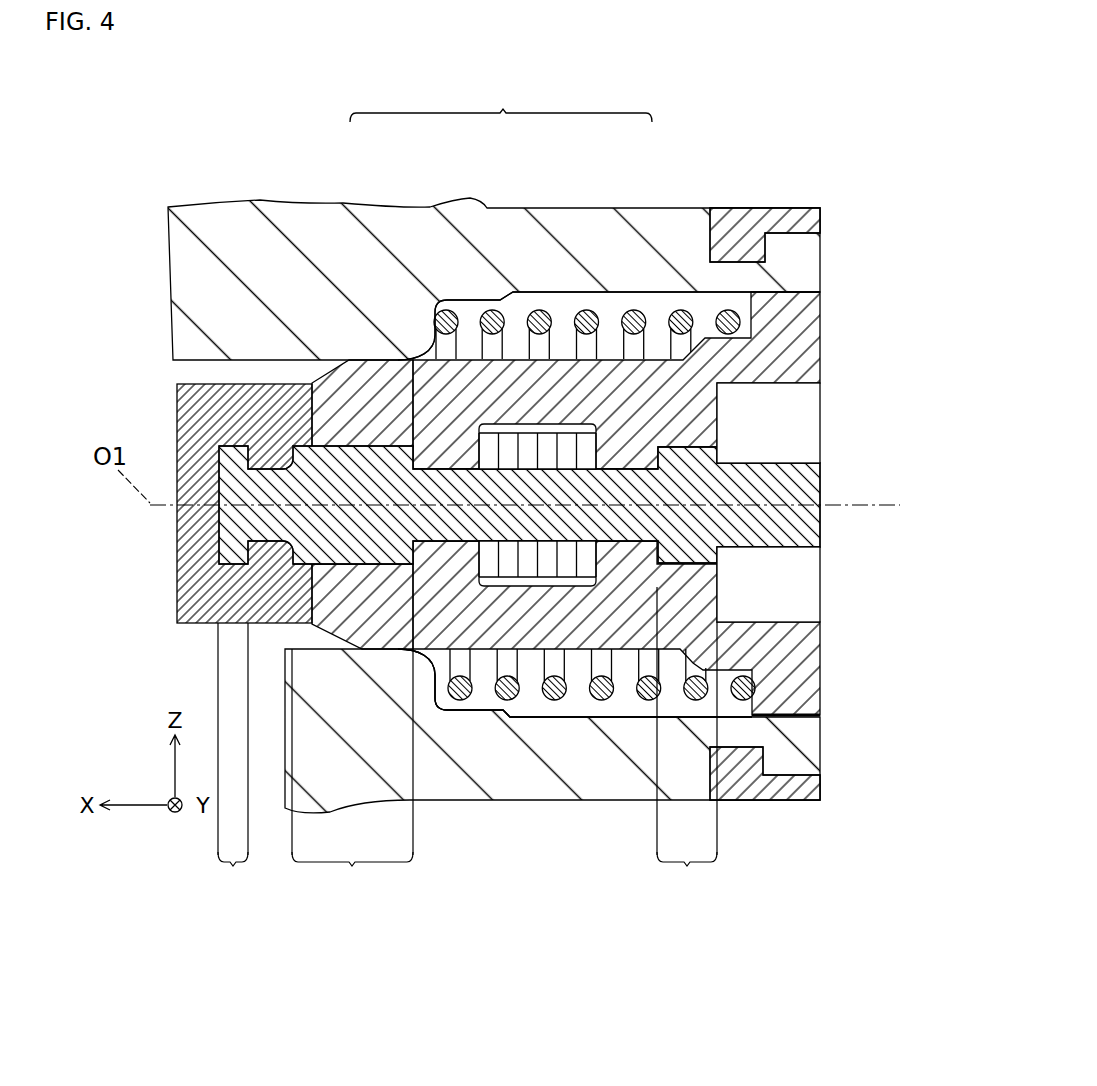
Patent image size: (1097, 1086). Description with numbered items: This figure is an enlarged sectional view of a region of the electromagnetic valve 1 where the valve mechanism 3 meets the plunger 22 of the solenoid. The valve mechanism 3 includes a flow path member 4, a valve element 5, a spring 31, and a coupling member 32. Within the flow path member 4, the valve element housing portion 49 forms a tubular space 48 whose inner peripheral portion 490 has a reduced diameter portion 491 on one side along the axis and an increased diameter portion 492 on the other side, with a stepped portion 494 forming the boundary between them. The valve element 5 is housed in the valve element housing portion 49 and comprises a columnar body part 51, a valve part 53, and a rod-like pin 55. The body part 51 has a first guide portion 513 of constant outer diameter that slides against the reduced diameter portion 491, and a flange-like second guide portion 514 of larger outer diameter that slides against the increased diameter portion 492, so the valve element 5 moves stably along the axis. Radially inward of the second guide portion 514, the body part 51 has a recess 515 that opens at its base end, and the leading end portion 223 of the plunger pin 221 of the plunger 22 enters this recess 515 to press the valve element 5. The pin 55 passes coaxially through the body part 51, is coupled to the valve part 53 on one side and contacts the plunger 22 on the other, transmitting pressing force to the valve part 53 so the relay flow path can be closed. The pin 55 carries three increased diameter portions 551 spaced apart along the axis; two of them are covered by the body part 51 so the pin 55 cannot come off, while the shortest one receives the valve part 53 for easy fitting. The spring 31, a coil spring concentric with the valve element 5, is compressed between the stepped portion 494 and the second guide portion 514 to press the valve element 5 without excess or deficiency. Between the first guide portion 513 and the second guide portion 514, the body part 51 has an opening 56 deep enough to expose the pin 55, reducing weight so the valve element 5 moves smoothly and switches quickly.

The electromagnetic valve 1 is at (915, 152).
The valve mechanism 3 is at (133, 208).
The flow path member 4 is at (285, 215).
The valve element 5 is at (501, 100).
The plunger 22 is at (800, 458).
The spring 31 is at (689, 299).
The coupling member 32 is at (809, 203).
The tubular space 48 is at (552, 755).
The valve element housing portion 49 is at (580, 690).
The body part 51 is at (606, 345).
The valve part 53 is at (276, 372).
The pin 55 is at (423, 443).
The opening 56 is at (538, 423).
The plunger pin 221 is at (588, 484).
The leading end portion 223 is at (757, 470).
The inner peripheral portion 490 is at (803, 709).
The reduced diameter portion 491 is at (317, 640).
The increased diameter portion 492 is at (527, 708).
The stepped portion 494 is at (437, 683).
The first guide portion 513 is at (393, 650).
The second guide portion 514 is at (792, 714).
The recess 515 is at (788, 580).
The increased diameter portion 551 is at (459, 756).